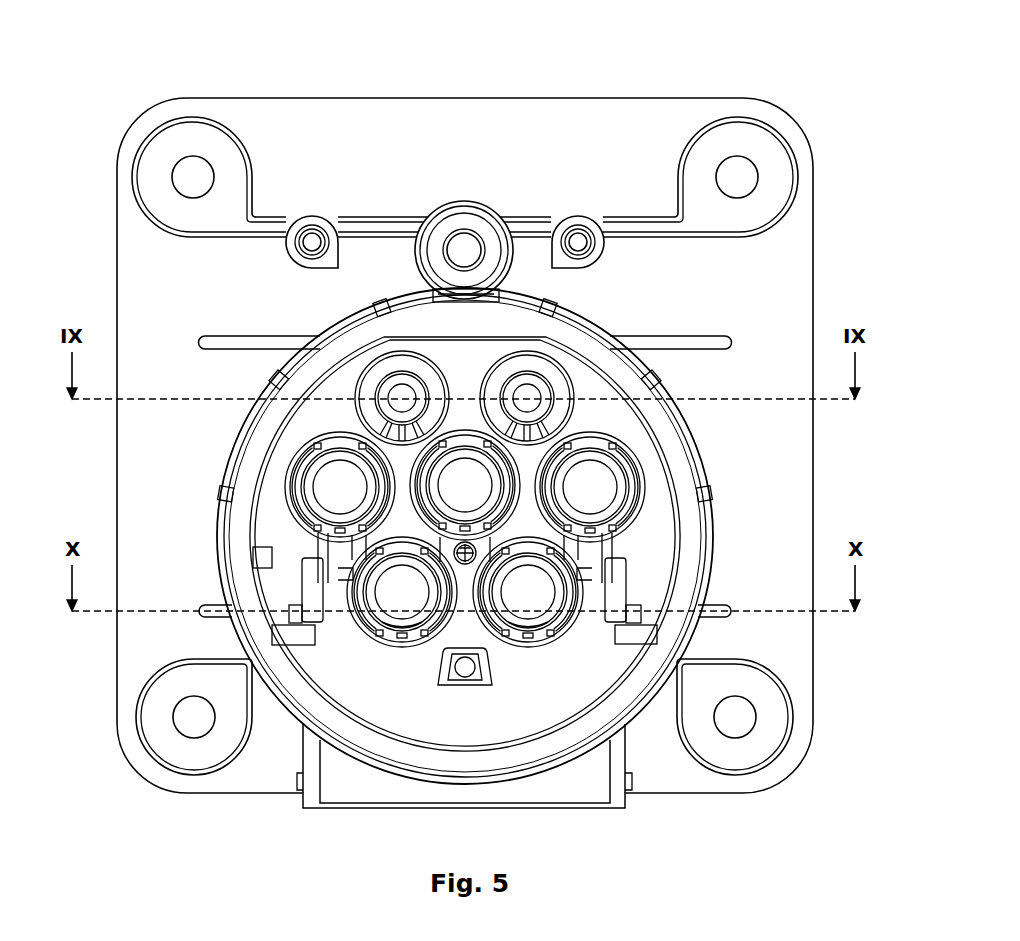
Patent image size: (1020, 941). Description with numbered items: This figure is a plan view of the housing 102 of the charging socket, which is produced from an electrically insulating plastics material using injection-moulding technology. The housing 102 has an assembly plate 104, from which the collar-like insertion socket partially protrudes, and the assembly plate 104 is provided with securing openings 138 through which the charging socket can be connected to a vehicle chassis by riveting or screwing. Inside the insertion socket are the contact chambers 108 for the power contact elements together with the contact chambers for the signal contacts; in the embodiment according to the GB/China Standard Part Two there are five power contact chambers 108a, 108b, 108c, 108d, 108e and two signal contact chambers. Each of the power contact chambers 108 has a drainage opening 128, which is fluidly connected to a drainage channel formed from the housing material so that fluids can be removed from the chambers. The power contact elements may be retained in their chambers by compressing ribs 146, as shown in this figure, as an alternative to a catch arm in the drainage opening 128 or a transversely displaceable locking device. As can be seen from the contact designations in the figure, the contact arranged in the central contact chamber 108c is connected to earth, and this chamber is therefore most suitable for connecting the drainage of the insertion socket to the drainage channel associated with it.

The housing 102 is at (131, 46).
The assembly plate 104 is at (784, 772).
The securing openings 138 is at (742, 176).
The contact chambers for the power contact elements 108 is at (517, 638).
The power contact chamber 108a is at (623, 520).
The power contact chamber 108b is at (556, 632).
The central contact chamber 108c is at (465, 485).
The power contact chamber 108d is at (385, 637).
The power contact chamber 108e is at (300, 512).
The drainage opening 128 is at (405, 635).
The compressing ribs 146 is at (548, 635).